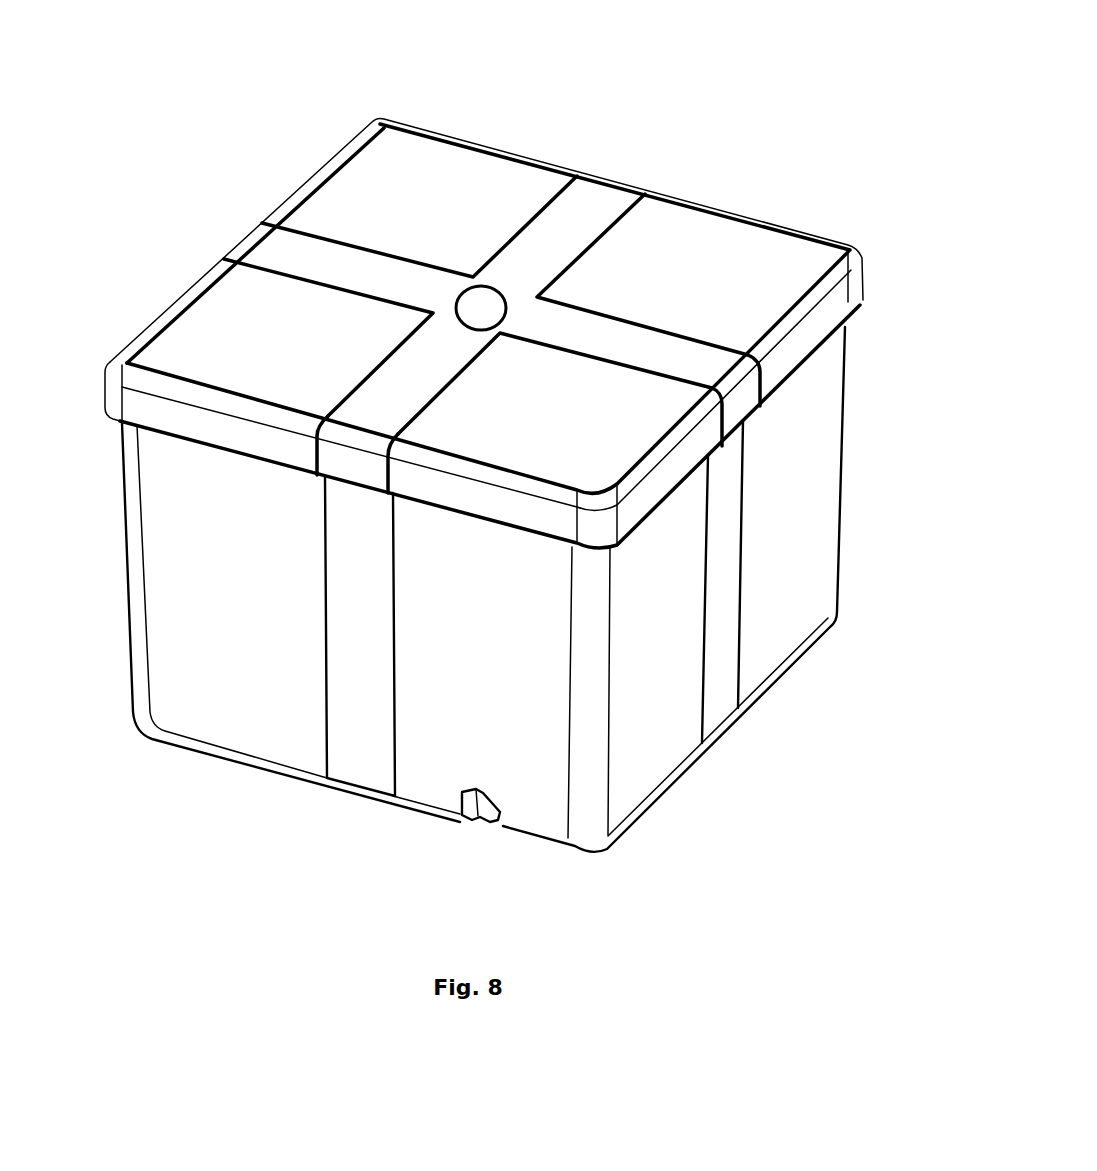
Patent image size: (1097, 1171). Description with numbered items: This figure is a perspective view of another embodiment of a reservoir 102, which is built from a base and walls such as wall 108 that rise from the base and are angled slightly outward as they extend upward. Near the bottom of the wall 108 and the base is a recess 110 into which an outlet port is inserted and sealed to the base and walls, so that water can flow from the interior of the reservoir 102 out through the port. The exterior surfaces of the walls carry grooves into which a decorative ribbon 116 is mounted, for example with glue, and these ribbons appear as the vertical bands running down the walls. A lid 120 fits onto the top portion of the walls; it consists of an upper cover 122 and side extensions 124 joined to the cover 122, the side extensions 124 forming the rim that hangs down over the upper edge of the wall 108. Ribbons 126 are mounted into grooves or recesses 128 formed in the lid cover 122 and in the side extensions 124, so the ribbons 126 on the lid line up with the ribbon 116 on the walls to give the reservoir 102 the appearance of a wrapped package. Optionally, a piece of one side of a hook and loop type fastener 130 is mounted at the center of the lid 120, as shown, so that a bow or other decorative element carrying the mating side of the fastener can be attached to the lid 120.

The reservoir 102 is at (510, 620).
The wall 108 is at (258, 698).
The recess 110 is at (487, 818).
The decorative ribbon 116 is at (352, 757).
The lid 120 is at (494, 299).
The upper cover 122 is at (688, 270).
The side extensions 124 is at (183, 417).
The ribbons 126 is at (260, 243).
The grooves or recesses 128 is at (225, 258).
The hook and loop type fastener 130 is at (478, 312).